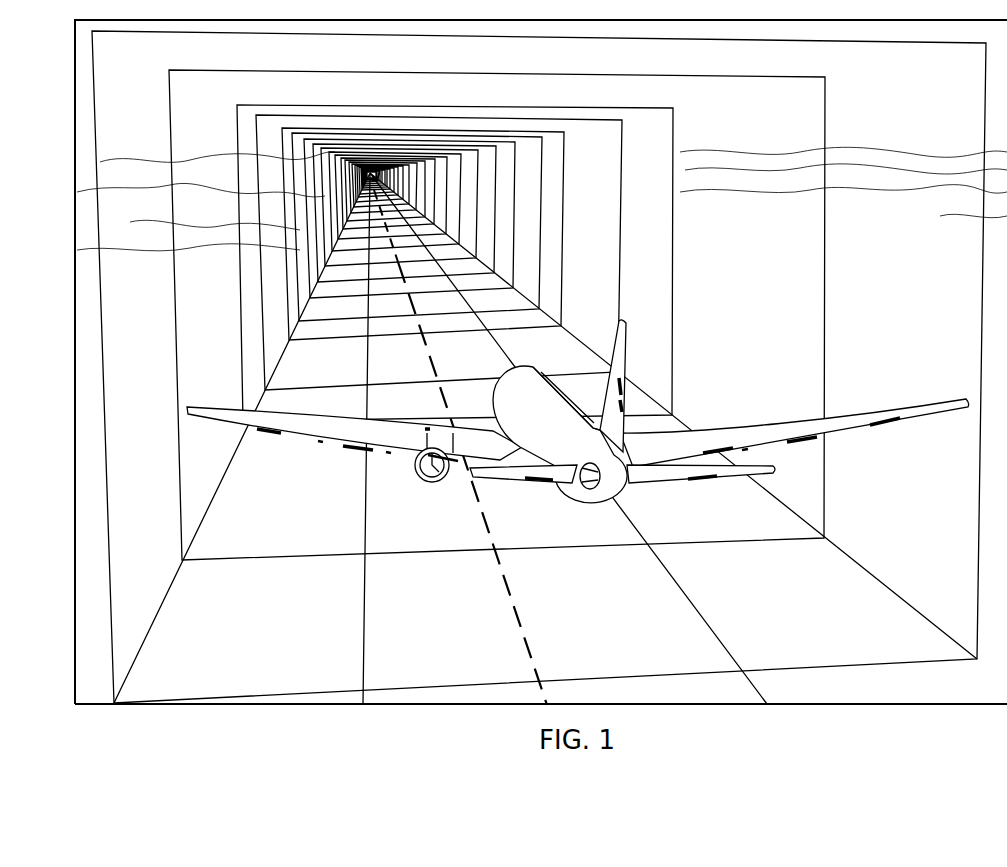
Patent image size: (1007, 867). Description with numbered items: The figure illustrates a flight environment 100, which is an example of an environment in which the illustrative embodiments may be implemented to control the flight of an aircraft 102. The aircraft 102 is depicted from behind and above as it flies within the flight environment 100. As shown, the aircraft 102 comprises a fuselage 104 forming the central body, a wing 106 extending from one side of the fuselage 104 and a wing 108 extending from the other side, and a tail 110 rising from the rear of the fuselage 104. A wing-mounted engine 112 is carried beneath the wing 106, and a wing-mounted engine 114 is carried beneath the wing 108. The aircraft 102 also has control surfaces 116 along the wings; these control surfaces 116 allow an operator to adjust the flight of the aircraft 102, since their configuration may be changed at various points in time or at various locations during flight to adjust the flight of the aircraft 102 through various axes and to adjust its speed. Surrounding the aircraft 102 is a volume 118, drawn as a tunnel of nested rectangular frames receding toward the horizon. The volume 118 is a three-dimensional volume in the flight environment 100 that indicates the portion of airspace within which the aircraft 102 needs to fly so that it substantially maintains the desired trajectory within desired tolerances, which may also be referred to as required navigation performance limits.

The flight environment 100 is at (66, 222).
The aircraft 102 is at (491, 368).
The fuselage 104 is at (557, 383).
The wing 106 is at (356, 431).
The wing 108 is at (772, 421).
The tail 110 is at (630, 332).
The wing-mounted engine 112 is at (438, 484).
The wing-mounted engine 114 is at (668, 480).
The control surfaces 116 is at (354, 455).
The volume 118 is at (299, 188).